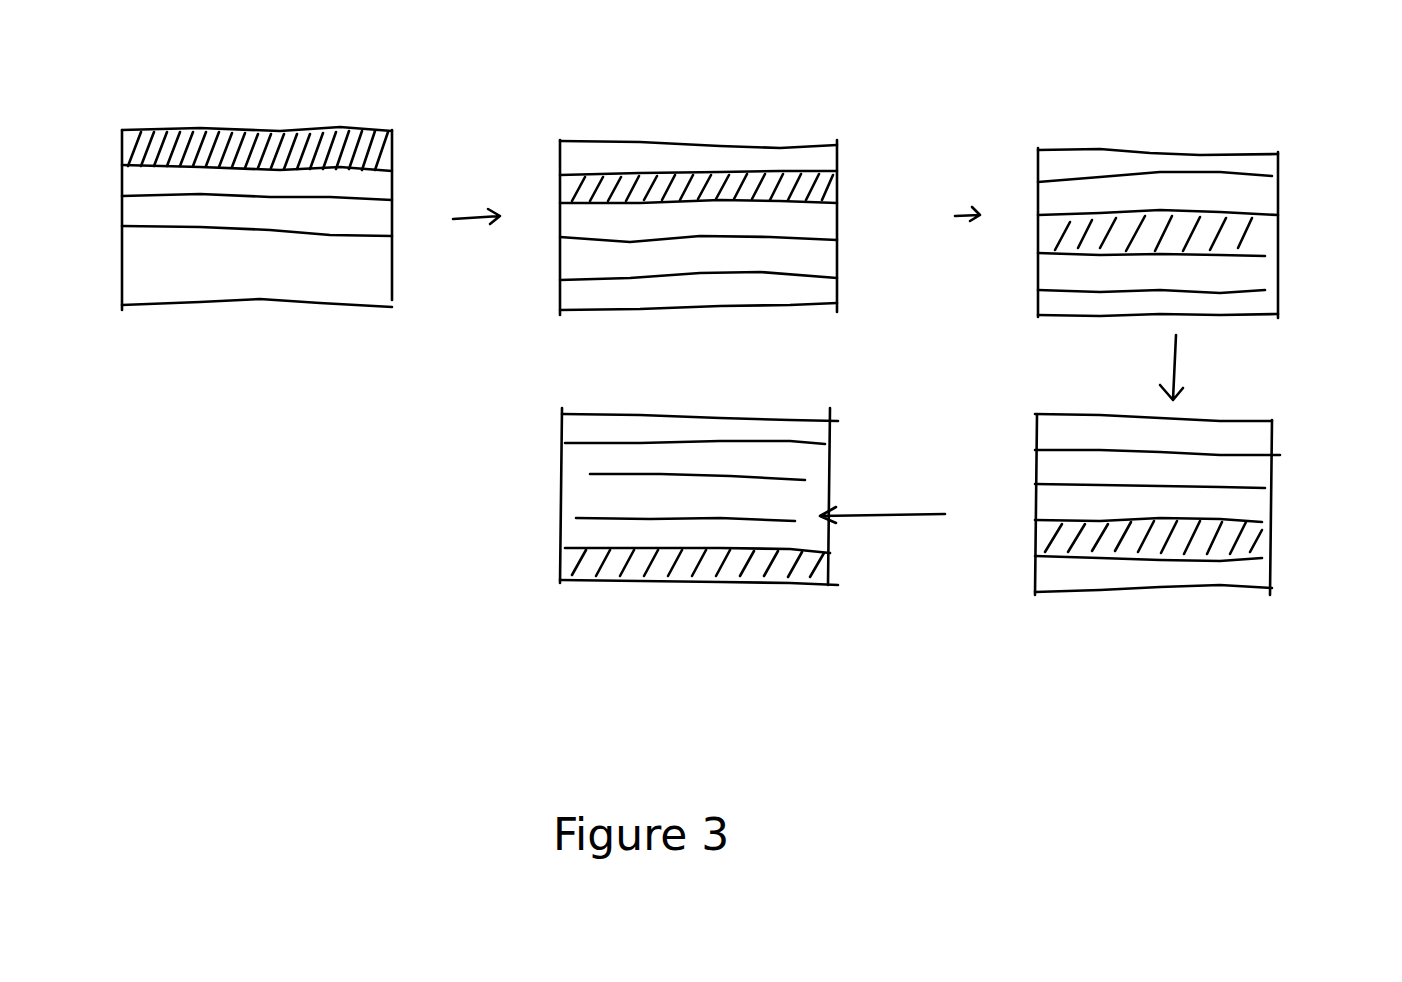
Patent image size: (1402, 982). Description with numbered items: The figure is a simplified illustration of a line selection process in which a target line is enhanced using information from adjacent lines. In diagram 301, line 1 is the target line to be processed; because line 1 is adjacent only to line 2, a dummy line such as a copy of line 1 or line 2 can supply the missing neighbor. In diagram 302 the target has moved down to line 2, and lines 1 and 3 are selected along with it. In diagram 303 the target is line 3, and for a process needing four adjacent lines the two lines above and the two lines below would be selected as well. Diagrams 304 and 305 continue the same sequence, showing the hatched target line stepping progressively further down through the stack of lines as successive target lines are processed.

The diagram 301 is at (318, 80).
The diagram 302 is at (755, 129).
The diagram 303 is at (1165, 139).
The fourth stage: layer near bottom 304 is at (1296, 497).
The fifth stage: layer at bottom 305 is at (755, 608).
The line 1 is at (122, 156).
The line 2 is at (122, 183).
The line 3 is at (122, 224).